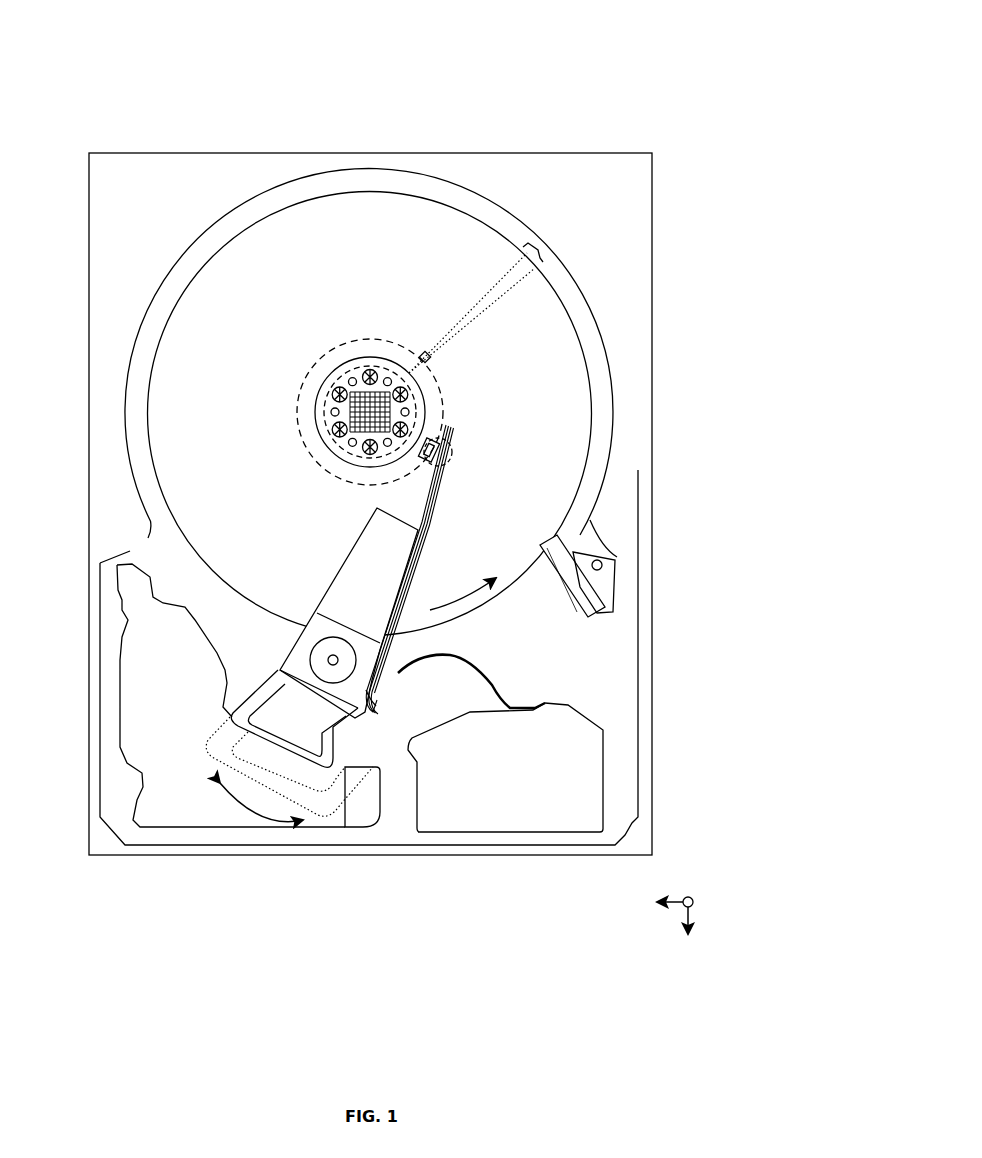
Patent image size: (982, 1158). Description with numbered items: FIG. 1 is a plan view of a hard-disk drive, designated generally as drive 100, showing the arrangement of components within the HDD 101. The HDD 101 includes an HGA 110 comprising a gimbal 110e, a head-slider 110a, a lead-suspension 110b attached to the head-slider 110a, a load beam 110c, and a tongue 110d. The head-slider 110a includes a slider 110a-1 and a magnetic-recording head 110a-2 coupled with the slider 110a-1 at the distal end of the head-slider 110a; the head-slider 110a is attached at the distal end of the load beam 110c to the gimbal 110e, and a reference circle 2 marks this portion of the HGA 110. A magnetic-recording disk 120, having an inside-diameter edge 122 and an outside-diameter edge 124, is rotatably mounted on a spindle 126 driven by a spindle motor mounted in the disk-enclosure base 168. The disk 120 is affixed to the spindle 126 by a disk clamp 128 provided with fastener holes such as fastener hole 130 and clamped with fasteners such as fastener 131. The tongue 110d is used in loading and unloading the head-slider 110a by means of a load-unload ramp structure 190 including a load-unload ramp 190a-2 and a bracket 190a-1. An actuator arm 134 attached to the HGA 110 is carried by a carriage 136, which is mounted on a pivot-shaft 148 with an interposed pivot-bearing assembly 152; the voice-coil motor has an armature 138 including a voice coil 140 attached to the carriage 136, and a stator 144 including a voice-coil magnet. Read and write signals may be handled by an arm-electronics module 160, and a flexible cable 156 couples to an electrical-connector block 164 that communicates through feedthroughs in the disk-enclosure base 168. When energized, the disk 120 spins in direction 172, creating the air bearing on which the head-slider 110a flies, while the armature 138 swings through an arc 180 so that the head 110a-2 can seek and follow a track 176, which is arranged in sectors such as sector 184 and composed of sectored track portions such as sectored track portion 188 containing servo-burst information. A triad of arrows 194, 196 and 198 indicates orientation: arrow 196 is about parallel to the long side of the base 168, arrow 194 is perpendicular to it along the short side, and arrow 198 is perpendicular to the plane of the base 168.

The disk drive 100 is at (197, 88).
The HDD 101 is at (624, 142).
The HGA 110 is at (803, 372).
The head-slider 110a is at (750, 252).
The slider 110a-1 is at (436, 483).
The magnetic-recording head 110a-2 is at (447, 456).
The lead-suspension 110b is at (427, 492).
The load beam 110c is at (410, 502).
The tongue 110d is at (441, 441).
The gimbal 110e is at (440, 470).
The magnetic-recording disk 120 is at (252, 502).
The inside-diameter edge 122 is at (280, 442).
The outside-diameter edge 124 is at (150, 458).
The spindle 126 is at (366, 408).
The disk clamp 128 is at (320, 388).
The fastener hole 130 is at (368, 376).
The fastener 131 is at (373, 372).
The actuator arm 134 is at (380, 557).
The carriage 136 is at (332, 627).
The armature 138 is at (350, 733).
The voice coil 140 is at (338, 752).
The stator 144 is at (146, 745).
The pivot-shaft 148 is at (330, 660).
The pivot-bearing assembly 152 is at (347, 660).
The flexible cable 156 is at (468, 660).
The arm-electronics module 160 is at (377, 683).
The electrical-connector block 164 is at (580, 770).
The disk-enclosure base 168 is at (100, 847).
The direction 172 is at (472, 593).
The track 176 is at (303, 445).
The arc 180 is at (263, 808).
The sector 184 is at (543, 243).
The sectored track portion 188 is at (428, 350).
The load-unload ramp structure 190 is at (776, 455).
The bracket 190a-1 is at (598, 588).
The load-unload ramp 190a-2 is at (557, 550).
The arrow 194 is at (672, 896).
The arrow 196 is at (694, 912).
The arrow 198 is at (694, 900).
The reference circle 2 is at (447, 430).